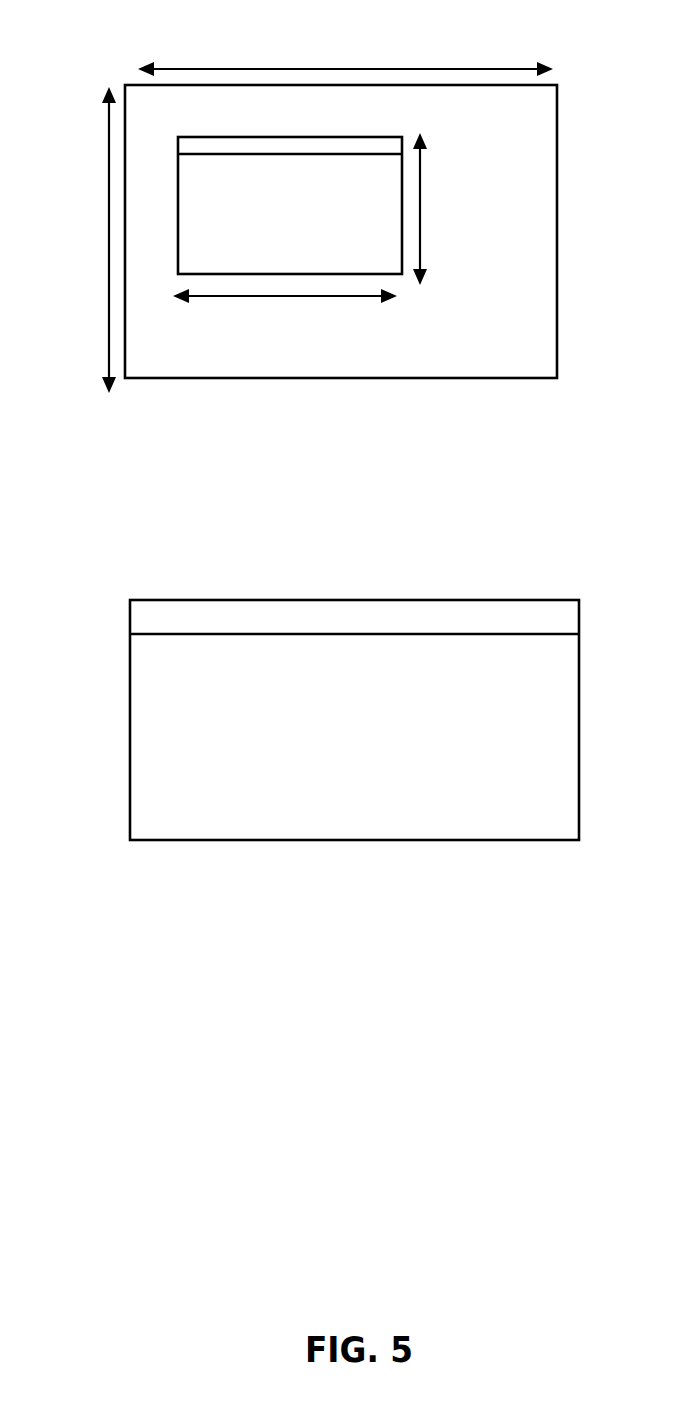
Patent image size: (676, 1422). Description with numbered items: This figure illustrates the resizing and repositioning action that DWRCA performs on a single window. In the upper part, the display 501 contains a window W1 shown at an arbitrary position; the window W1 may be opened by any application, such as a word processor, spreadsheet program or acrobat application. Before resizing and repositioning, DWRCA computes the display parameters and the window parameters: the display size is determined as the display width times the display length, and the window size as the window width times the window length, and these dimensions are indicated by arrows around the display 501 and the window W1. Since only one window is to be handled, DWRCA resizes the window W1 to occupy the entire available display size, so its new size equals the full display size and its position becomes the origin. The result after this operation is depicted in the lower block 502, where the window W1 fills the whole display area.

The display 501 is at (341, 197).
The block 502 is at (354, 692).
The window W1 is at (290, 205).